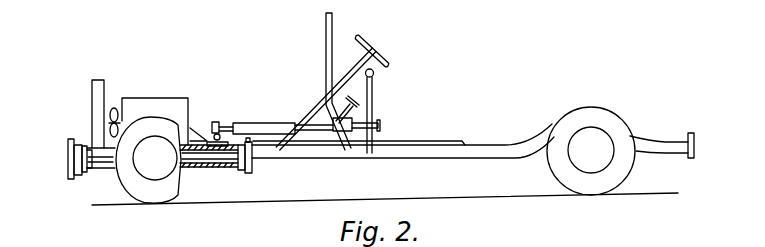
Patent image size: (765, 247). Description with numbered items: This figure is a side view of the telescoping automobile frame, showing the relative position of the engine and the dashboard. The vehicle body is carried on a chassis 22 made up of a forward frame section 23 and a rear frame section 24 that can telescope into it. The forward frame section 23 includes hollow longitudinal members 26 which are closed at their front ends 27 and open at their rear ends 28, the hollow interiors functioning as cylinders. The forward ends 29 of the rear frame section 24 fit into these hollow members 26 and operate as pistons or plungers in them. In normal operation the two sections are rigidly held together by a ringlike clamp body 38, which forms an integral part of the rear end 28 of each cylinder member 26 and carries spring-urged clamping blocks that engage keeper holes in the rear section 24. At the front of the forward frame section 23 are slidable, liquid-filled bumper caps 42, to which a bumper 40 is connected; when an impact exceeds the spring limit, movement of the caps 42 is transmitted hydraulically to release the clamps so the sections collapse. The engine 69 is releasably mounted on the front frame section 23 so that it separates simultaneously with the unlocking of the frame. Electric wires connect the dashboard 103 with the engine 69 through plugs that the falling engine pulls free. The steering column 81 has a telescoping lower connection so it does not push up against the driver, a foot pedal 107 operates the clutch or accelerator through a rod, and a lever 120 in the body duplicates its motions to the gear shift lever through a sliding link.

The chassis 22 is at (472, 137).
The forward frame section 23 is at (78, 136).
The rear frame section 24 is at (448, 158).
The hollow longitudinal members 26 is at (107, 170).
The front ends 27 is at (92, 172).
The rear ends 28 is at (255, 166).
The forward ends 29 is at (231, 166).
The clamp body 38 is at (249, 142).
The bumper 40 is at (70, 160).
The bumper caps 42 is at (73, 150).
The engine 69 is at (160, 103).
The steering column 81 is at (375, 42).
The dashboard 103 is at (326, 47).
The foot pedal 107 is at (375, 115).
The lever 120 is at (374, 89).